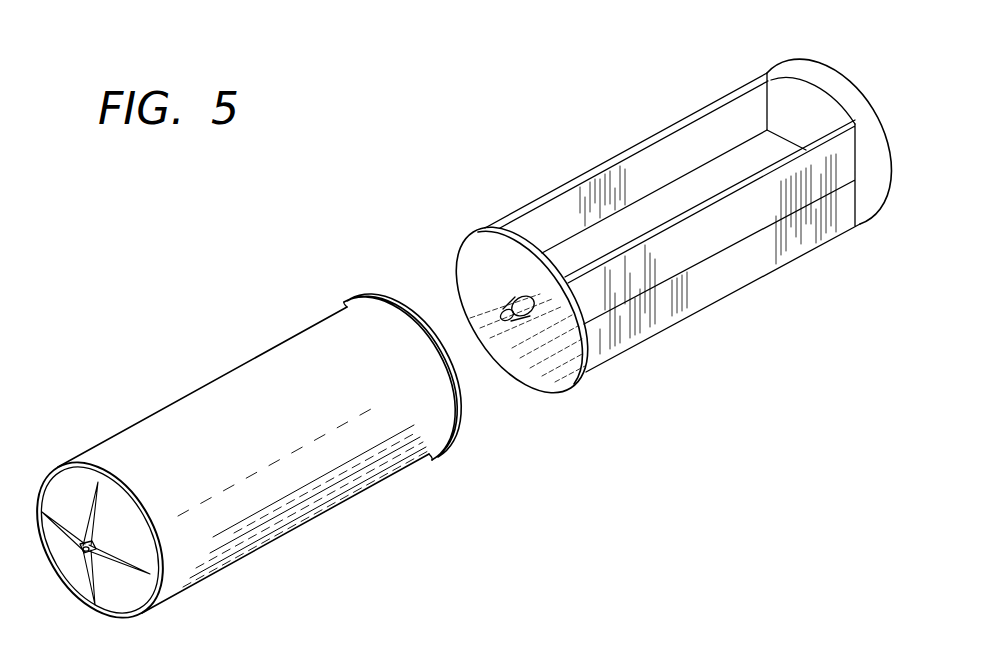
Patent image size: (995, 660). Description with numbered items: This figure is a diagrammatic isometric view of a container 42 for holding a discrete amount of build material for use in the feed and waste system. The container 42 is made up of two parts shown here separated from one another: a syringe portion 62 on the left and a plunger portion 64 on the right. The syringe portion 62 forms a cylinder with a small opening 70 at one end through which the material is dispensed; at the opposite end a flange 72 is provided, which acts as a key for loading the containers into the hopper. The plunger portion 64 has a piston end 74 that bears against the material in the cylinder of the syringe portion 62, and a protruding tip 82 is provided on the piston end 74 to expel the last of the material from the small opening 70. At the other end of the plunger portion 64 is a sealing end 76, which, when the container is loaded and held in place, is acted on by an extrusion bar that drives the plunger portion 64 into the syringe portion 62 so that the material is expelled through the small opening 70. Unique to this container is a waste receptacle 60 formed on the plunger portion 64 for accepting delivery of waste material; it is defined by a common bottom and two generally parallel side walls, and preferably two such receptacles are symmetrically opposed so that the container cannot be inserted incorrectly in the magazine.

The container 42 is at (360, 222).
The waste receptacle 60 is at (668, 162).
The syringe portion 62 is at (217, 407).
The plunger portion 64 is at (752, 283).
The small opening 70 is at (88, 552).
The flange 72 is at (366, 296).
The piston end 74 is at (483, 257).
The sealing end 76 is at (808, 122).
The protruding tip 82 is at (515, 322).